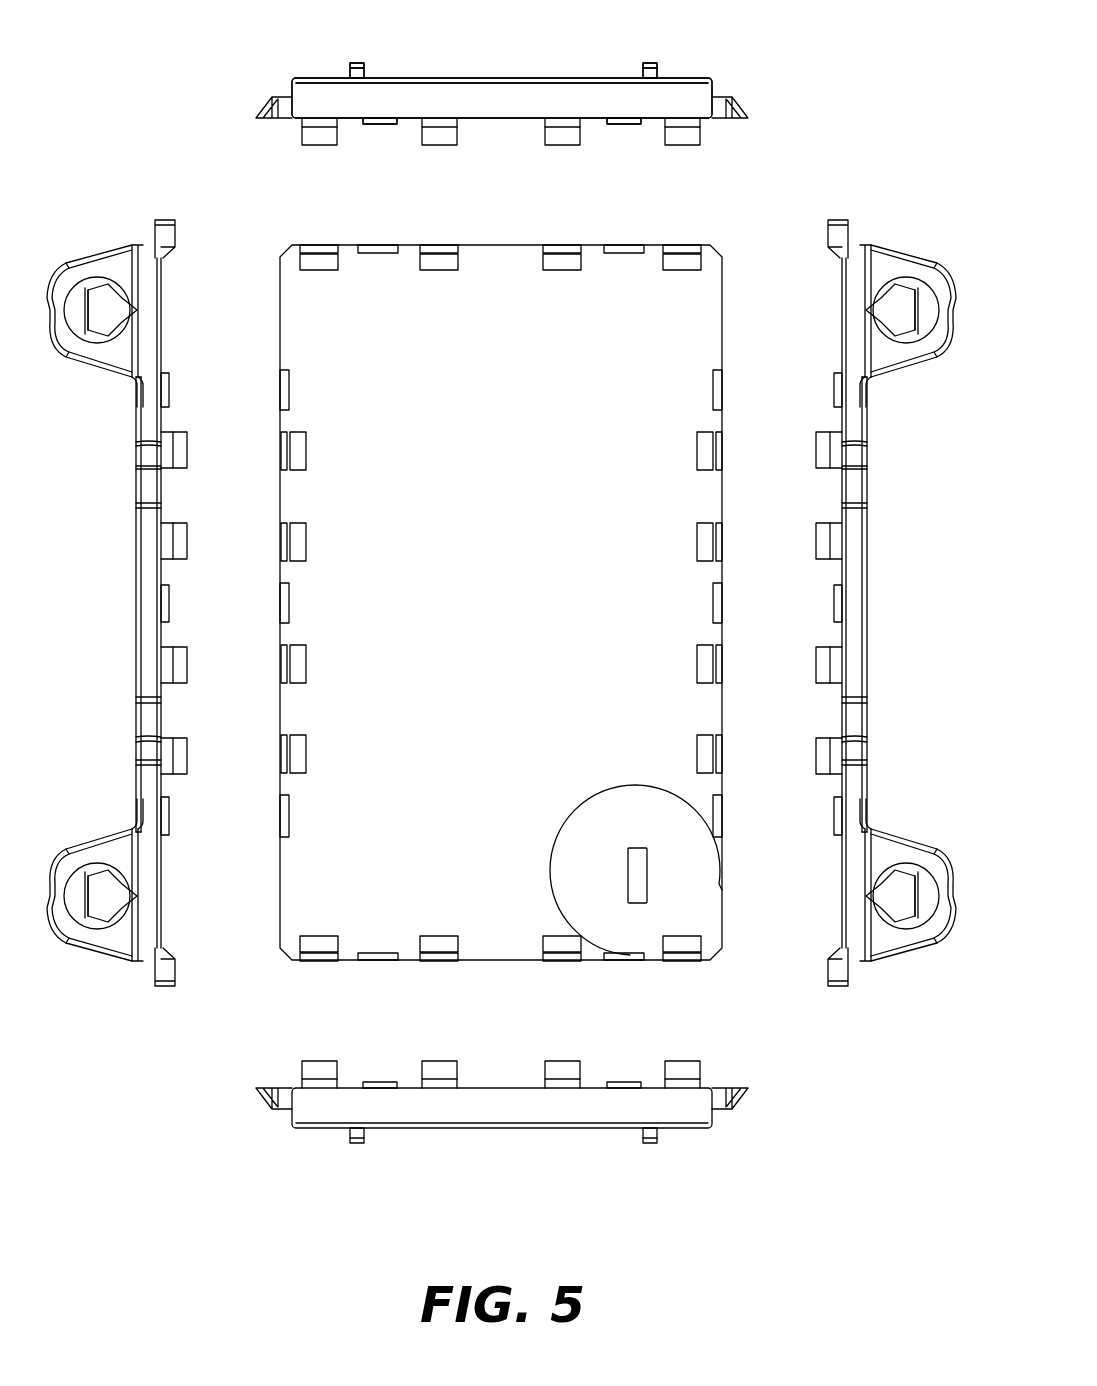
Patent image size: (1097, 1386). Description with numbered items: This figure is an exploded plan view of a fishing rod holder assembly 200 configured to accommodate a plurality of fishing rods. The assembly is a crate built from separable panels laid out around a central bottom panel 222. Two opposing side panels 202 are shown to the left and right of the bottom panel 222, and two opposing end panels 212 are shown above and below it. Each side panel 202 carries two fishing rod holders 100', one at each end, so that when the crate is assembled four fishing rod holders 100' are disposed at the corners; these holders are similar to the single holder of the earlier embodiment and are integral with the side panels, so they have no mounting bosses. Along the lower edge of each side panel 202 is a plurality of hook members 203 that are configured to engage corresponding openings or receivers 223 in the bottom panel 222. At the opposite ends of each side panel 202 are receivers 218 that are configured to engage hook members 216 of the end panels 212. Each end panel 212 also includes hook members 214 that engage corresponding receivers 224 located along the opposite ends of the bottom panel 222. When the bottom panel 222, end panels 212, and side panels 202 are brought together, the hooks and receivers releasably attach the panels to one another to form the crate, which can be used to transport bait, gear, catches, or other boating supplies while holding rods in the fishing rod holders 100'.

The fishing rod holder assembly 200 is at (864, 58).
The end panel 212 is at (502, 72).
The hook member 214 is at (319, 145).
The hook member 216 is at (258, 104).
The receiver 218 is at (178, 234).
The side panel 202 is at (127, 601).
The hook member 203 is at (188, 450).
The bottom panel 222 is at (521, 603).
The receiver 223 is at (307, 450).
The receiver 224 is at (319, 270).
The fishing rod holder 100' is at (501, 581).